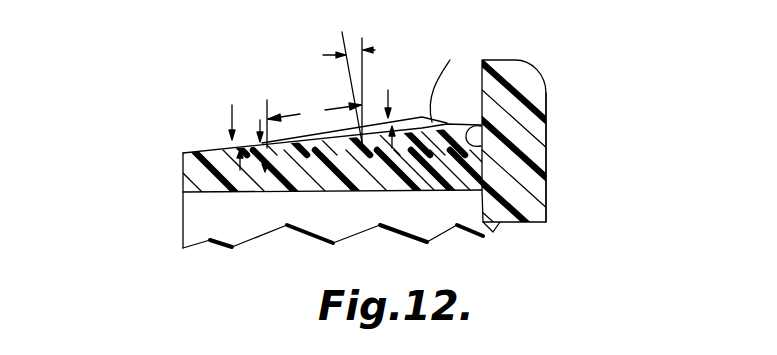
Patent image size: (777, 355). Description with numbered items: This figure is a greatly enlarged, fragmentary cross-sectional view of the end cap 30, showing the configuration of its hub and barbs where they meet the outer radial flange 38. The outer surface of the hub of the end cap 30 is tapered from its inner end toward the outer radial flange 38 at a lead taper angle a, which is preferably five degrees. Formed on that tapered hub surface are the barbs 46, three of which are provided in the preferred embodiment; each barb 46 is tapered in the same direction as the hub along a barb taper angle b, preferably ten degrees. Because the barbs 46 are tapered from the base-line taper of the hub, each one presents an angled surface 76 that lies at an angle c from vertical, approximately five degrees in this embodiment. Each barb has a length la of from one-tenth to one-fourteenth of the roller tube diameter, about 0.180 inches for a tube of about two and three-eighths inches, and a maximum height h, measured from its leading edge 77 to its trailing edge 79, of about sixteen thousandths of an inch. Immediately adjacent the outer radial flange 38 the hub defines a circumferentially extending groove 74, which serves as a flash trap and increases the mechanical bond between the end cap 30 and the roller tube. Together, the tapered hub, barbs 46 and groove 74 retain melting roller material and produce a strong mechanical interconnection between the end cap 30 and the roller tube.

The end cap 30 is at (268, 176).
The outer radial flange 38 is at (540, 70).
The barb 46 is at (452, 56).
The groove 74 is at (544, 102).
The angled surface 76 is at (290, 151).
The leading edge 77 is at (364, 135).
The trailing edge 79 is at (448, 122).
The lead taper angle a is at (262, 160).
The barb taper angle b is at (230, 147).
The angle from vertical c is at (366, 50).
The barb height h is at (388, 90).
The barb length la is at (314, 111).